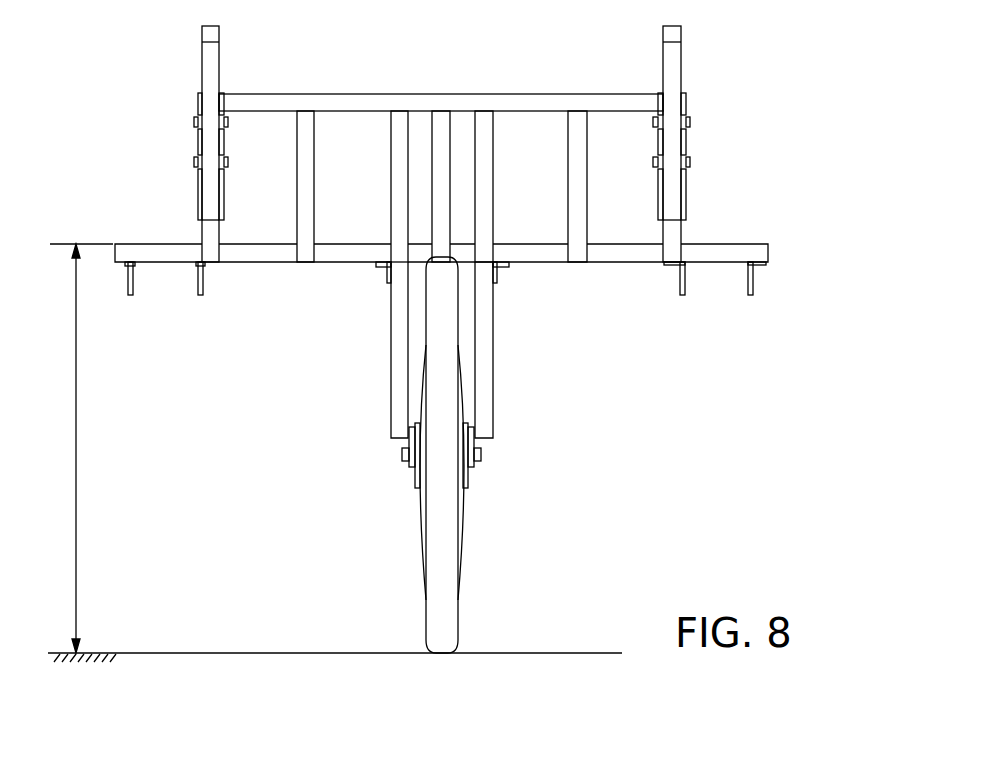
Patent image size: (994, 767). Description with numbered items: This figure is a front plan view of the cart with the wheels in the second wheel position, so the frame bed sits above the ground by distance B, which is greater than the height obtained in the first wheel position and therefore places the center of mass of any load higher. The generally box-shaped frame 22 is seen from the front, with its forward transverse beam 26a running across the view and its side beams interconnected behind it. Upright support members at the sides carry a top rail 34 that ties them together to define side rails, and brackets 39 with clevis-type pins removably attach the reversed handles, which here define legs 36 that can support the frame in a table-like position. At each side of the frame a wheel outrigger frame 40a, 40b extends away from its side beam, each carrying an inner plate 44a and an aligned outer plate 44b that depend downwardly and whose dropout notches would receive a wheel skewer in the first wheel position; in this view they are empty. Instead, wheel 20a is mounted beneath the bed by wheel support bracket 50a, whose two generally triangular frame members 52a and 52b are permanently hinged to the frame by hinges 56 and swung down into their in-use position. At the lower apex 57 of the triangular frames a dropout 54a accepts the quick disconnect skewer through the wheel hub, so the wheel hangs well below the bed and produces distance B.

The wheel 20a is at (496, 553).
The frame 22 is at (454, 144).
The forward transverse beam 26a is at (555, 263).
The top rail 34 is at (356, 94).
The leg 36 is at (202, 33).
The bracket 39 is at (222, 145).
The wheel outrigger frame 40a is at (736, 238).
The wheel outrigger frame 40b is at (143, 236).
The inner plate 44a is at (205, 285).
The outer plate 44b is at (132, 291).
The wheel support bracket 50a is at (425, 395).
The triangular frame member 52a is at (392, 368).
The triangular frame member 52b is at (490, 368).
The dropout 54a is at (410, 467).
The hinge 56 is at (377, 266).
The lower apex 57 is at (403, 449).
The distance B is at (76, 428).